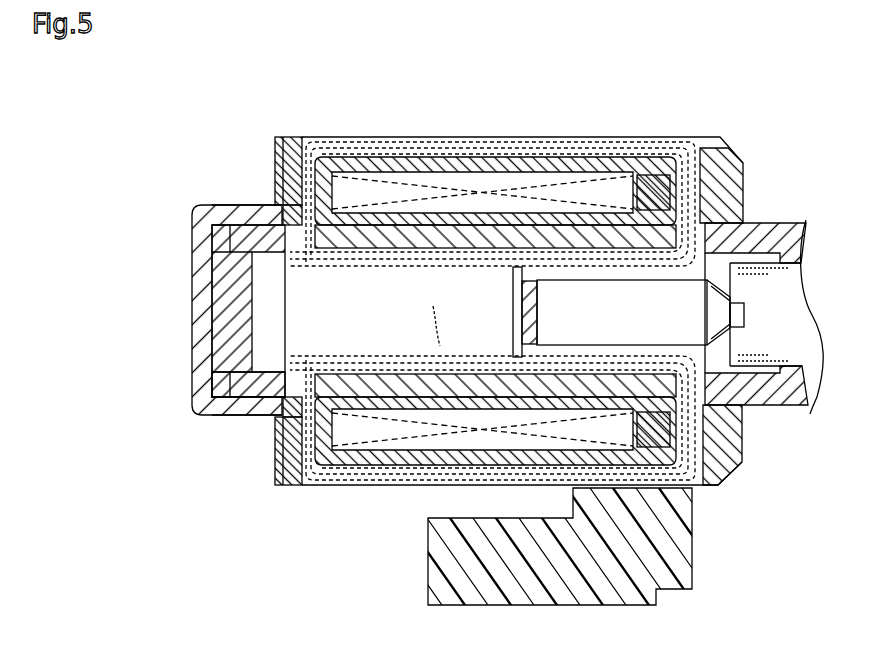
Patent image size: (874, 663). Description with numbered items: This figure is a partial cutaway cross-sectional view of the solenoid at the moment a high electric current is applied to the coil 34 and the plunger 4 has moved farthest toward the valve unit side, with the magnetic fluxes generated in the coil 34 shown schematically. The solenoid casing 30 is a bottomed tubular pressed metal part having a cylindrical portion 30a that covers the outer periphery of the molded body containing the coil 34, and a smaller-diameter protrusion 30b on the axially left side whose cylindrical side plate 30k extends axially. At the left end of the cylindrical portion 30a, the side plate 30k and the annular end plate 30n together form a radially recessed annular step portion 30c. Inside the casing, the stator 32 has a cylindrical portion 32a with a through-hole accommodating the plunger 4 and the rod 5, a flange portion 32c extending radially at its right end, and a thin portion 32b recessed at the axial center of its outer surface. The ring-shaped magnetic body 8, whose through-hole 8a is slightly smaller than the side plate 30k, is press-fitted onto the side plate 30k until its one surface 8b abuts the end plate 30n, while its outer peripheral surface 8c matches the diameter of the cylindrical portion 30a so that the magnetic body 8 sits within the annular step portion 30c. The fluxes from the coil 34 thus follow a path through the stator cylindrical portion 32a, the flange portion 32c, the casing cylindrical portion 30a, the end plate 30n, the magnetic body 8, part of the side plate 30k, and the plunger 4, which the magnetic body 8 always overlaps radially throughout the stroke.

The plunger 4 is at (702, 400).
The rod 5 is at (667, 330).
The magnetic body 8 is at (253, 484).
The through-hole 8a is at (283, 400).
The one surface 8b is at (273, 452).
The outer peripheral surface 8c is at (292, 488).
The solenoid casing 30 is at (526, 116).
The cylindrical portion 30a is at (488, 136).
The protrusion 30b is at (197, 197).
The annular step portion 30c is at (266, 182).
The side plate 30k is at (238, 203).
The end plate 30n is at (294, 136).
The stator 32 is at (760, 191).
The cylindrical portion 32a is at (224, 262).
The thin portion 32b is at (474, 236).
The flange portion 32c is at (690, 152).
The coil 34 is at (598, 200).